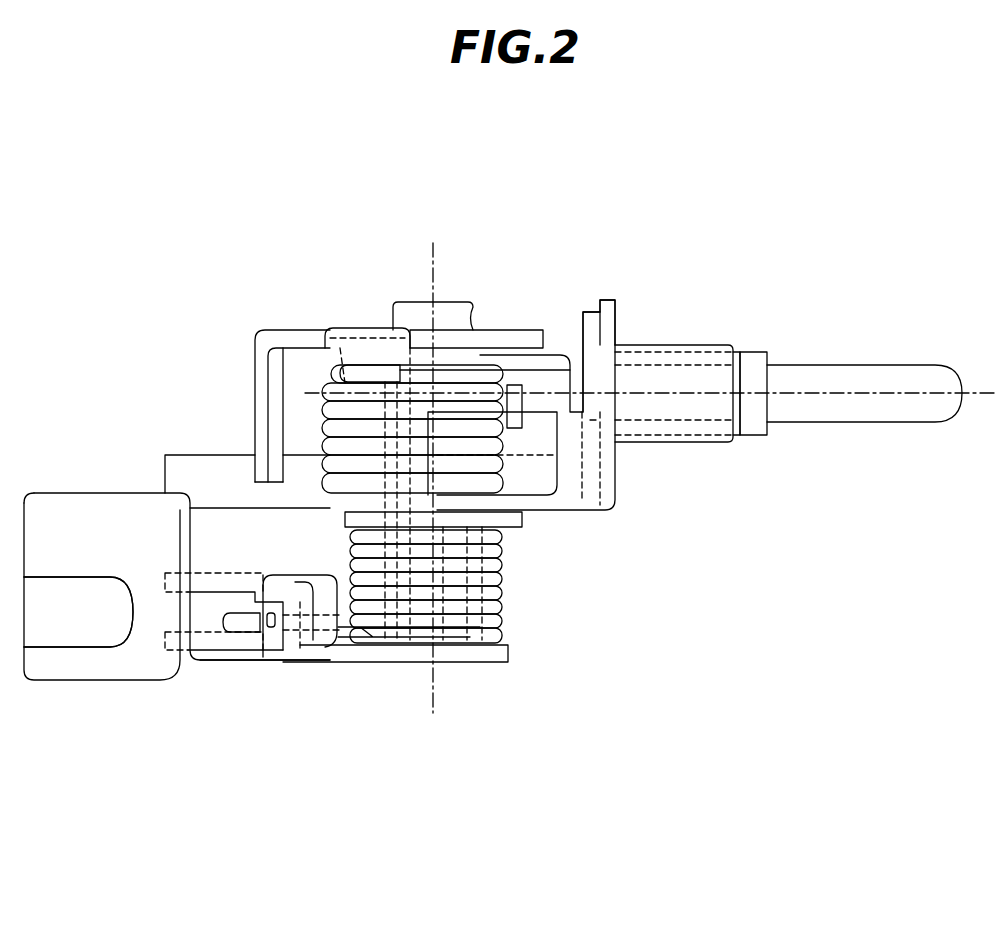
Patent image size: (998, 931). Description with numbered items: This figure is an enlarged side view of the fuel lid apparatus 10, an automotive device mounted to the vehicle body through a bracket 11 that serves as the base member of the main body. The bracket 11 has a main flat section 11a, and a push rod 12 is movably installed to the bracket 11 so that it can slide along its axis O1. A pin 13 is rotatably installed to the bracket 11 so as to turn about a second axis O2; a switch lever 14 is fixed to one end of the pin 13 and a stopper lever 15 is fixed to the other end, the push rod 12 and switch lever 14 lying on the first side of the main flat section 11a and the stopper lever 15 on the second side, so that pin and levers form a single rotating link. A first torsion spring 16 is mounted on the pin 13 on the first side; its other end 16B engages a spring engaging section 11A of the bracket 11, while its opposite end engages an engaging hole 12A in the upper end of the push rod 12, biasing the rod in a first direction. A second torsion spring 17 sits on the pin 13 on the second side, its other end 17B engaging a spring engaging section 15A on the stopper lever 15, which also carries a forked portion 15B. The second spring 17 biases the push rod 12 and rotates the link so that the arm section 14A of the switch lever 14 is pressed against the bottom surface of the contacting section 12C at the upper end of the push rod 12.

The fuel lid apparatus 10 is at (568, 668).
The bracket 11 is at (179, 452).
The spring engaging section 11A is at (370, 368).
The main flat section 11a is at (218, 490).
The push rod 12 is at (864, 426).
The engaging hole 12A is at (515, 403).
The contacting section 12C is at (453, 313).
The pin 13 is at (457, 635).
The switch lever 14 is at (258, 324).
The arm section 14A is at (527, 330).
The stopper lever 15 is at (357, 670).
The spring engaging section 15A is at (300, 660).
The fork of bracket 15B is at (205, 577).
The first spring 16 is at (497, 335).
The other end of the first spring 16B is at (355, 335).
The second spring 17 is at (507, 592).
The other end of the second spring 17B is at (240, 630).
The axis of the push rod O1 is at (985, 393).
The axis of the pin O2 is at (433, 262).